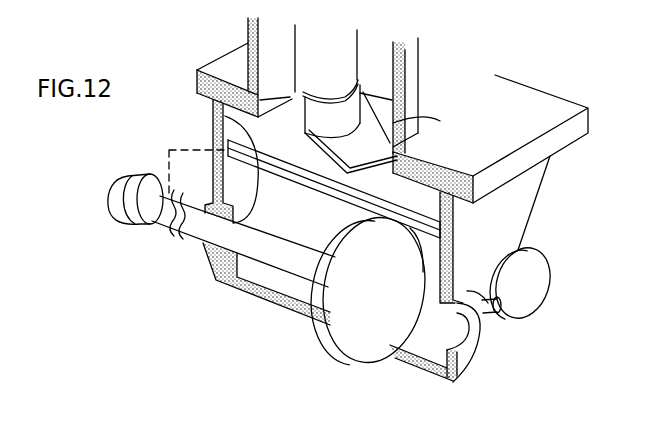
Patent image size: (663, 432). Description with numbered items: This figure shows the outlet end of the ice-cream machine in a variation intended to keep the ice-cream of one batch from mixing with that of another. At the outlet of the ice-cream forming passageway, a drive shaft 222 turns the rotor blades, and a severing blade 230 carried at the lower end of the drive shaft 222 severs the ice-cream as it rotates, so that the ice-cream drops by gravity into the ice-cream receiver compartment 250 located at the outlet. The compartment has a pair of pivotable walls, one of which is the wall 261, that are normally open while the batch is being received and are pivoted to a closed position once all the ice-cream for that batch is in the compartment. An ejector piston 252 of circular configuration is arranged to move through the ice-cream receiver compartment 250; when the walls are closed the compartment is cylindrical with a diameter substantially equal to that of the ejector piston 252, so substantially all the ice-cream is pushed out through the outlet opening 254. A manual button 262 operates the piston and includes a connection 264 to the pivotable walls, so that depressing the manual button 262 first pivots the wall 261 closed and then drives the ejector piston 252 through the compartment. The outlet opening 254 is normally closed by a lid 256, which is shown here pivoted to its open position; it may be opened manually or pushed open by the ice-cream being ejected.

The drive shaft 222 is at (350, 60).
The severing blade 230 is at (370, 147).
The ice-cream receiver compartment 250 is at (433, 266).
The ejector piston 252 is at (340, 328).
The outlet opening 254 is at (470, 327).
The lid 256 is at (535, 273).
The pivotable wall 261 is at (212, 106).
The manual button 262 is at (113, 210).
The connection 264 is at (168, 150).